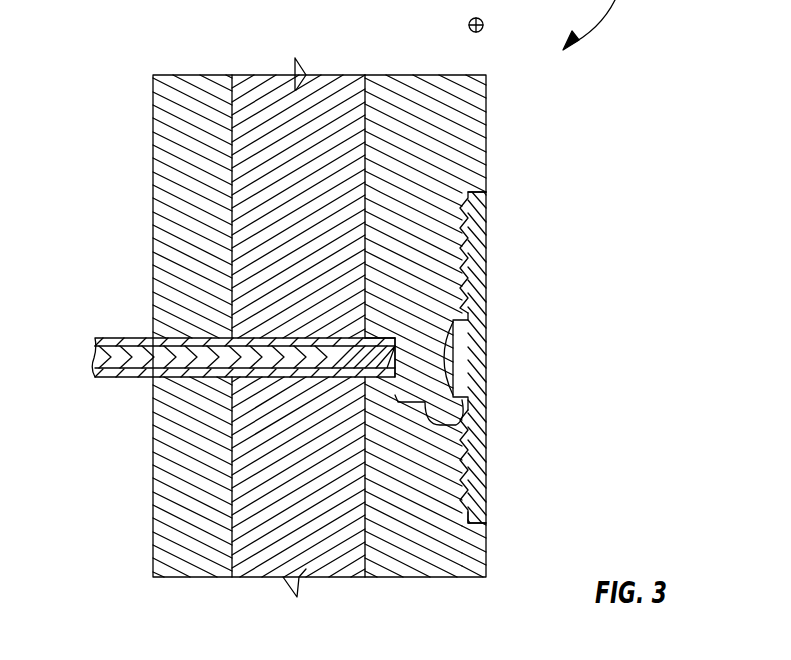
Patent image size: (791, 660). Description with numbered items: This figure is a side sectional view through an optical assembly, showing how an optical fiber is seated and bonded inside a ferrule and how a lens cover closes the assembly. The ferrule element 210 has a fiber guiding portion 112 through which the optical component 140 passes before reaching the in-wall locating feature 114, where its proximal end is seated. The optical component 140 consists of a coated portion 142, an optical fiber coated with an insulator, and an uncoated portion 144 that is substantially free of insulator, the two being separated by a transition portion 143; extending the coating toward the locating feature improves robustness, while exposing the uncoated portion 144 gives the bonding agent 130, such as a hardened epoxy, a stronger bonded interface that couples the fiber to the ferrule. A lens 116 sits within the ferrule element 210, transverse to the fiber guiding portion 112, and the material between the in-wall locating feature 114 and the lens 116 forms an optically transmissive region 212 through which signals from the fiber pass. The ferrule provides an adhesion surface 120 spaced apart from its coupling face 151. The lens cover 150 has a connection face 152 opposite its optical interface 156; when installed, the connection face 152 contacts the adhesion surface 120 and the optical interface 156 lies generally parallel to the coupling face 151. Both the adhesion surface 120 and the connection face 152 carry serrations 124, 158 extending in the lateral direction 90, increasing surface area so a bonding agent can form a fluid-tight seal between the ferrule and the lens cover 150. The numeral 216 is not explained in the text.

The lateral direction 90 is at (484, 29).
The lens cover 150 is at (520, 234).
The serrations 124 is at (480, 272).
The serrations 158 is at (480, 283).
The lens 116 is at (468, 338).
The transmissive region 212 is at (460, 422).
The adhesion surface 120 is at (486, 460).
The optical interface 156 is at (487, 505).
The coupling face 151 is at (487, 547).
The connection face 152 is at (460, 480).
The ferrule element 210 is at (180, 588).
The bonding agent 130 is at (332, 578).
The optical component 140 is at (110, 384).
The fiber guiding portion 112 is at (180, 340).
The coated portion 142 is at (243, 378).
The transition portion 143 is at (330, 378).
The uncoated portion 144 is at (373, 378).
The in-wall locating feature 114 is at (375, 347).
The plate edge 216 is at (388, 347).